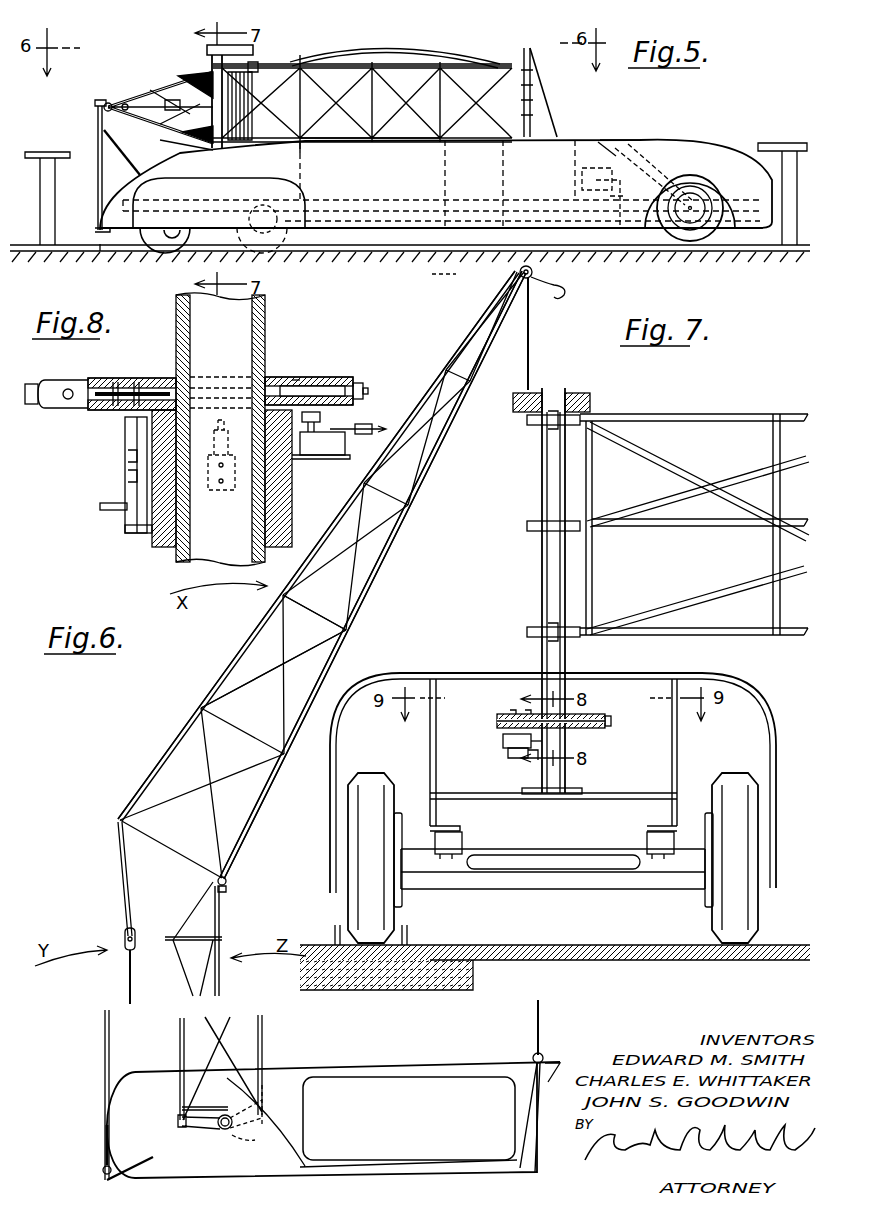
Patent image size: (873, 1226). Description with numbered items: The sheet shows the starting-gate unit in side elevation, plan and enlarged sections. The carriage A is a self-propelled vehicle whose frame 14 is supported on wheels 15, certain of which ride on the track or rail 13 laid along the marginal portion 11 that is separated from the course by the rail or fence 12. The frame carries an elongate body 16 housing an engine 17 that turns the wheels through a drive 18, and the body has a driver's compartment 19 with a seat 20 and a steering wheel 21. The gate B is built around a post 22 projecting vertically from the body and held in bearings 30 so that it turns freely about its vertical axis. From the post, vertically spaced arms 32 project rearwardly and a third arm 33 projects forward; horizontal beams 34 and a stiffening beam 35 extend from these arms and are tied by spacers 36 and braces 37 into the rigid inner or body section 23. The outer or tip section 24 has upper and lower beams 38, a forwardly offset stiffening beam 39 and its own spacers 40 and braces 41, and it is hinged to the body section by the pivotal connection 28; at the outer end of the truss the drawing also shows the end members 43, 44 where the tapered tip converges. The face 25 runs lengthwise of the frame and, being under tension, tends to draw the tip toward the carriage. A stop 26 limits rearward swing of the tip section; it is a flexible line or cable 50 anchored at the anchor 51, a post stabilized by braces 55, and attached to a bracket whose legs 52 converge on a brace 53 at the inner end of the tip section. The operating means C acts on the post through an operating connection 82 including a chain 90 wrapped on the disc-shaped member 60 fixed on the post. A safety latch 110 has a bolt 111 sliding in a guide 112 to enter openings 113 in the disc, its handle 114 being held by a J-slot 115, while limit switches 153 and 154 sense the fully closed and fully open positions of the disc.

In FIG. 7, the longitudinal marginal portion 11 is at (586, 945).
In FIG. 5, the rail or fence 12 is at (45, 152).
In FIG. 5, the track or rail 13 is at (80, 243).
In FIG. 7, the track or rail 13 is at (412, 937).
In FIG. 5, the frame 14 is at (416, 196).
In FIG. 7, the frame 14 is at (640, 804).
In FIG. 5, the wheels 15 is at (150, 247).
In FIG. 7, the wheels 15 is at (395, 911).
In FIG. 5, the elongate body 16 is at (510, 192).
In FIG. 7, the elongate body 16 is at (656, 673).
In FIG. 5, the engine 17 is at (552, 176).
In FIG. 5, the drive 18 is at (453, 277).
In FIG. 6, the drive 18 is at (515, 274).
In FIG. 5, the driver's compartment 19 is at (637, 148).
In FIG. 5, the seat 20 is at (605, 140).
In FIG. 5, the steering wheel 21 is at (640, 140).
In FIG. 5, the post 22 is at (201, 66).
In FIG. 6, the post 22 is at (226, 1142).
In FIG. 7, the post 22 is at (532, 584).
In FIG. 8, the post 22 is at (277, 310).
In FIG. 5, the inner or body section 23 is at (118, 104).
In FIG. 6, the inner or body section 23 is at (274, 1059).
In FIG. 7, the inner or body section 23 is at (694, 515).
In FIG. 5, the outer or tip section 24 is at (444, 54).
In FIG. 6, the outer or tip section 24 is at (360, 640).
In FIG. 6, the face 25 is at (540, 346).
In FIG. 5, the stop 26 is at (107, 94).
In FIG. 6, the stop 26 is at (118, 1003).
In FIG. 6, the pivotal connection 28 is at (230, 888).
In FIG. 5, the bearings 30 is at (205, 48).
In FIG. 7, the bearings 30 is at (590, 394).
In FIG. 8, the bearings 30 is at (166, 548).
In FIG. 5, the arms 32 is at (255, 62).
In FIG. 6, the arms 32 is at (258, 1146).
In FIG. 7, the arms 32 is at (532, 428).
In FIG. 5, the third arm 33 is at (176, 150).
In FIG. 6, the third arm 33 is at (198, 1132).
In FIG. 7, the third arm 33 is at (530, 525).
In FIG. 6, the horizontal beams 34 is at (225, 986).
In FIG. 7, the horizontal beams 34 is at (748, 414).
In FIG. 6, the stiffening beam 35 is at (178, 986).
In FIG. 7, the stiffening beam 35 is at (665, 526).
In FIG. 6, the spacers 36 is at (206, 940).
In FIG. 7, the spacers 36 is at (598, 575).
In FIG. 6, the braces 37 is at (207, 1020).
In FIG. 7, the braces 37 is at (692, 471).
In FIG. 5, the upper and lower beams 38 is at (380, 55).
In FIG. 6, the upper and lower beams 38 is at (268, 803).
In FIG. 5, the stiffening beam 39 is at (424, 127).
In FIG. 6, the stiffening beam 39 is at (248, 649).
In FIG. 6, the spacers 40 is at (418, 482).
In FIG. 6, the braces 41 is at (447, 422).
In FIG. 5, the end post 43 is at (533, 92).
In FIG. 6, the end post 43 is at (543, 1060).
In FIG. 5, the brace 44 is at (538, 84).
In FIG. 6, the brace 44 is at (522, 1125).
In FIG. 6, the flexible line or cable 50 is at (104, 1057).
In FIG. 5, the anchor 51 is at (97, 118).
In FIG. 6, the anchor 51 is at (103, 1180).
In FIG. 5, the legs 52 is at (183, 90).
In FIG. 6, the legs 52 is at (166, 938).
In FIG. 6, the brace 53 is at (122, 898).
In FIG. 5, the braces 55 is at (126, 160).
In FIG. 6, the braces 55 is at (107, 1143).
In FIG. 7, the disc-shaped member 60 is at (596, 720).
In FIG. 8, the disc-shaped member 60 is at (336, 377).
In FIG. 7, the operating connection 82 is at (490, 738).
In FIG. 8, the operating connection 82 is at (63, 371).
In FIG. 8, the flexible member or chain 90 is at (84, 378).
In FIG. 8, the safety latch 110 is at (115, 436).
In FIG. 8, the bolt 111 is at (125, 462).
In FIG. 8, the guide 112 is at (127, 530).
In FIG. 8, the openings 113 is at (142, 378).
In FIG. 8, the operating handle 114 is at (105, 510).
In FIG. 8, the J-slot 115 is at (128, 478).
In FIG. 8, the limit switch 153 is at (322, 455).
In FIG. 7, the limit switch 154 is at (522, 758).
In FIG. 8, the limit switch 154 is at (230, 493).
In FIG. 5, the carriage A is at (733, 147).
In FIG. 6, the carriage A is at (423, 1062).
In FIG. 7, the carriage A is at (760, 697).
In FIG. 5, the gate B is at (493, 58).
In FIG. 6, the gate B is at (175, 741).
In FIG. 7, the gate B is at (694, 515).
In FIG. 7, the operating means C is at (506, 744).
In FIG. 8, the operating means C is at (299, 369).